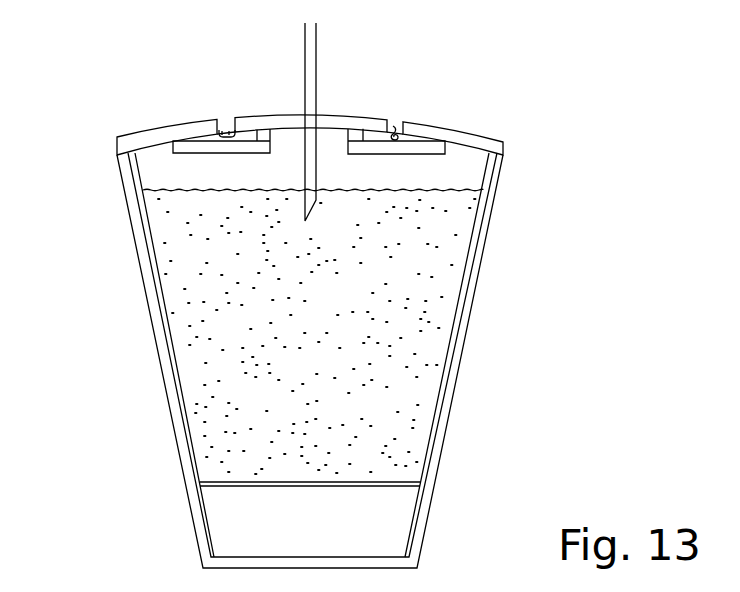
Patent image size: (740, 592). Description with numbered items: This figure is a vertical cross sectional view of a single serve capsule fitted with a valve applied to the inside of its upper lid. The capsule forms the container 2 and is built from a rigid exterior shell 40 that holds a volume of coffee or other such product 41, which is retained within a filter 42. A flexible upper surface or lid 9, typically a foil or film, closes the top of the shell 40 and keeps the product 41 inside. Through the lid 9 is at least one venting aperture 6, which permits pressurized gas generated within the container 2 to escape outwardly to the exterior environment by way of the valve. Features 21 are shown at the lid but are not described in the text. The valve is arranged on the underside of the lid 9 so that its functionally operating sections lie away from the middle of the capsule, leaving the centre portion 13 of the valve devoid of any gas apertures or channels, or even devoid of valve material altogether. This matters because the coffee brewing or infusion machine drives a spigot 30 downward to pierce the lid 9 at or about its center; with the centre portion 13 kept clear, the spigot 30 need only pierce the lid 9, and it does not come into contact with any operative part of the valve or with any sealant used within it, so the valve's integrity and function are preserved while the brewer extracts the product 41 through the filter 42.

The container 2 is at (153, 330).
The venting aperture 6 is at (223, 130).
The upper surface or lid 9 is at (142, 140).
The centre portion 13 is at (292, 147).
The feedthrough 21 is at (231, 131).
The spigot 30 is at (312, 102).
The rigid exterior shell 40 is at (425, 498).
The coffee or other such product 41 is at (408, 326).
The filter 42 is at (437, 384).